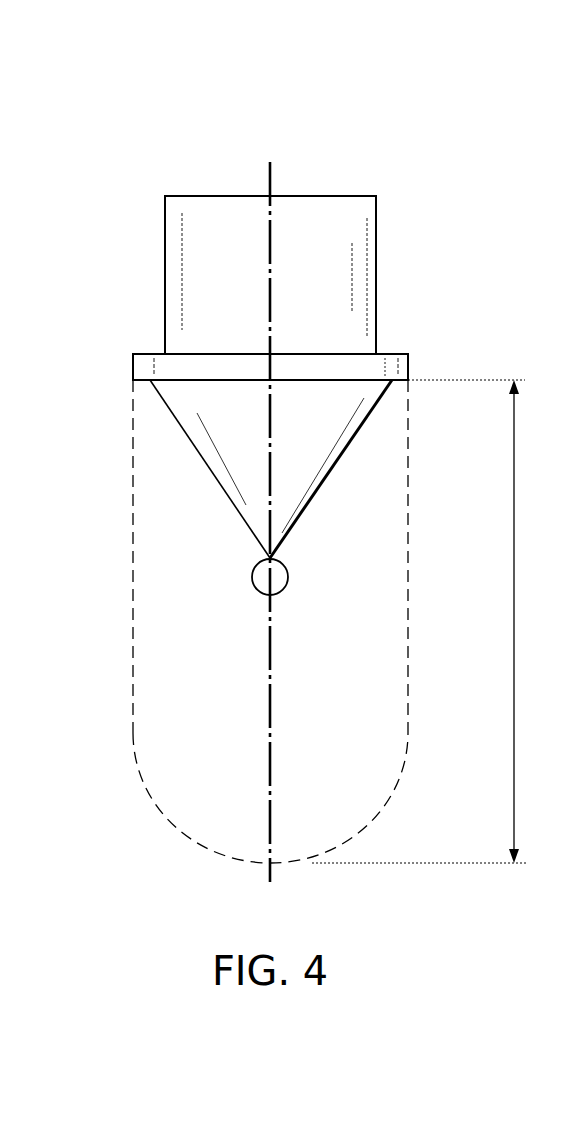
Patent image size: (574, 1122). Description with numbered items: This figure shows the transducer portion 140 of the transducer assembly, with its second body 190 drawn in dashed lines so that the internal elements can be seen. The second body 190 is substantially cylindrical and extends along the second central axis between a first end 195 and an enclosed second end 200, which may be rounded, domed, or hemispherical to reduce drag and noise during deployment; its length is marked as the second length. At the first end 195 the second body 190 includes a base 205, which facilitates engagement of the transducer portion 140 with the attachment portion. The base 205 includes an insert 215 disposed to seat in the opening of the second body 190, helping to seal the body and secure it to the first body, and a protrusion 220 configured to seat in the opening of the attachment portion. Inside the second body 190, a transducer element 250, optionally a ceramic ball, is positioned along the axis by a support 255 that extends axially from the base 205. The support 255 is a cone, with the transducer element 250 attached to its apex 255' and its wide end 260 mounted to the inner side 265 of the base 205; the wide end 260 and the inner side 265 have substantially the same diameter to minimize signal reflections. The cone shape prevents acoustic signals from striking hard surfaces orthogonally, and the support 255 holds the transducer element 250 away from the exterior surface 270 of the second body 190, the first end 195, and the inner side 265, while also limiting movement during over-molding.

The transducer portion 140 is at (97, 98).
The second body 190 is at (133, 570).
The first end 195 is at (133, 380).
The second end 200 is at (261, 864).
The base 205 is at (421, 366).
The insert 215 is at (389, 274).
The protrusion 220 is at (322, 196).
The transducer element 250 is at (285, 594).
The support 255 is at (331, 469).
The apex 255' is at (210, 472).
The wide end 260 is at (137, 364).
The inner side 265 is at (292, 380).
The exterior surface 270 is at (408, 567).